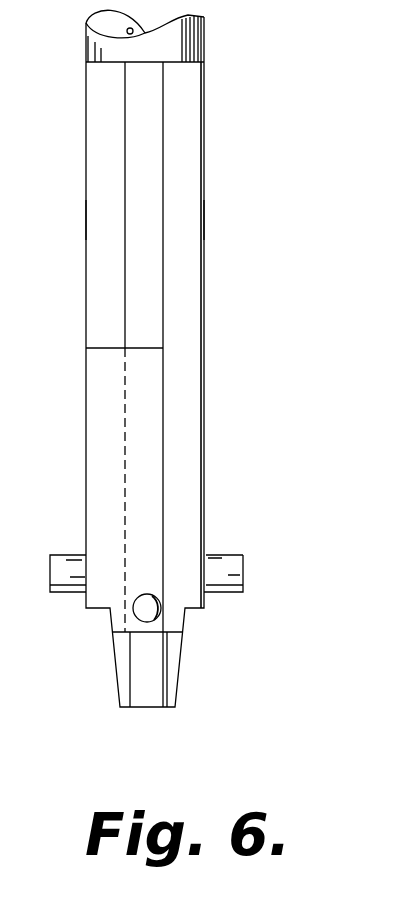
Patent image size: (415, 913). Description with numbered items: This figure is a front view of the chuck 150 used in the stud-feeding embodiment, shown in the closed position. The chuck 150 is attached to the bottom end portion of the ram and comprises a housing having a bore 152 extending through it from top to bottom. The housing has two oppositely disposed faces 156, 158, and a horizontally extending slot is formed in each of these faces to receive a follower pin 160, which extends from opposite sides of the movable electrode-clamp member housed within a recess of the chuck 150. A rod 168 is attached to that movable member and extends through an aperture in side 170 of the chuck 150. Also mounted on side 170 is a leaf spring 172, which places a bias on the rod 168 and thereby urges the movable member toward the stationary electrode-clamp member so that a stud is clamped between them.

The chuck 150 is at (208, 319).
The bore 152 is at (86, 23).
The face 156 is at (86, 221).
The face 158 is at (205, 218).
The follower pin 160 is at (65, 562).
The rod 168 is at (160, 614).
The side 170 is at (188, 400).
The leaf spring 172 is at (155, 523).